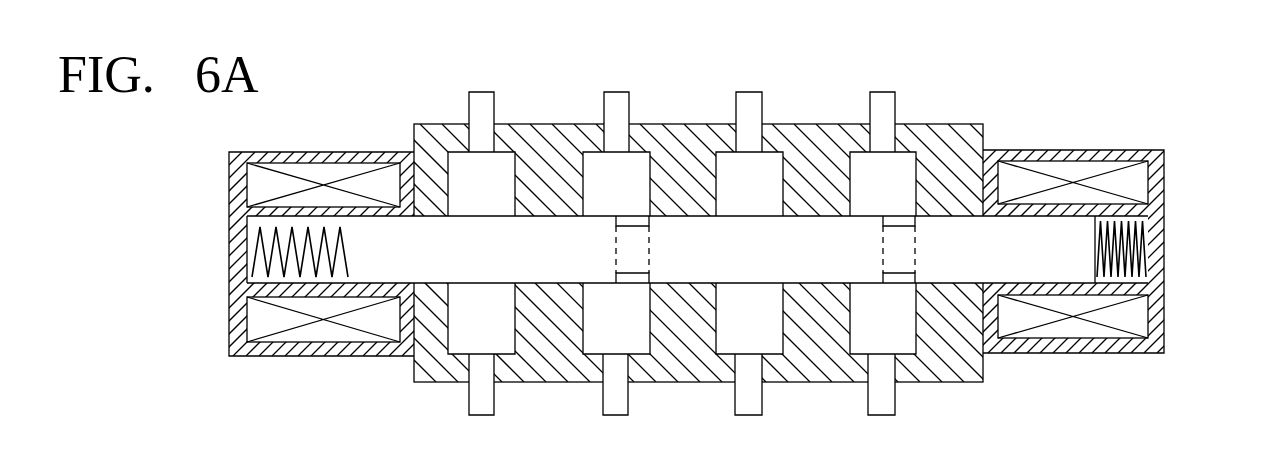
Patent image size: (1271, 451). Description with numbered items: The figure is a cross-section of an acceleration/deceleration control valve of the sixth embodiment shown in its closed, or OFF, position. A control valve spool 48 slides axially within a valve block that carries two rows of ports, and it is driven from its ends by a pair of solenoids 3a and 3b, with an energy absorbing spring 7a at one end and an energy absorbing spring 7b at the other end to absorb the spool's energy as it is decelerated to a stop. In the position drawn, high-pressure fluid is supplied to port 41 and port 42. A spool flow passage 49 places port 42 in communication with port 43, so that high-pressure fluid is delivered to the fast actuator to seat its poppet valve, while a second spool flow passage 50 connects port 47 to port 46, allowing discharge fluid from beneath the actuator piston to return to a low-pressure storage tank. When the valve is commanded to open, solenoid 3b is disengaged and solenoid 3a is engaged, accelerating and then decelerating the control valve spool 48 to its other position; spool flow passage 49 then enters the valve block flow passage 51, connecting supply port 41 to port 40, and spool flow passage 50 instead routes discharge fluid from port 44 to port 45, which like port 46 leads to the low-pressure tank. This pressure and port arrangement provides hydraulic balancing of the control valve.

The solenoid 3a is at (317, 172).
The solenoid 3b is at (1082, 168).
The energy absorbing spring 7a is at (253, 250).
The energy absorbing spring 7b is at (1147, 236).
The port 40 is at (482, 95).
The high-pressure fluid supply port 41 is at (482, 405).
The port 42 is at (614, 97).
The port 43 is at (623, 393).
The port 44 is at (753, 97).
The port 45 is at (749, 393).
The port 46 is at (882, 97).
The port 47 is at (882, 400).
The control valve spool 48 is at (530, 266).
The spool flow passage 49 is at (627, 279).
The spool flow passage 50 is at (893, 279).
The valve block flow passage 51 is at (495, 197).